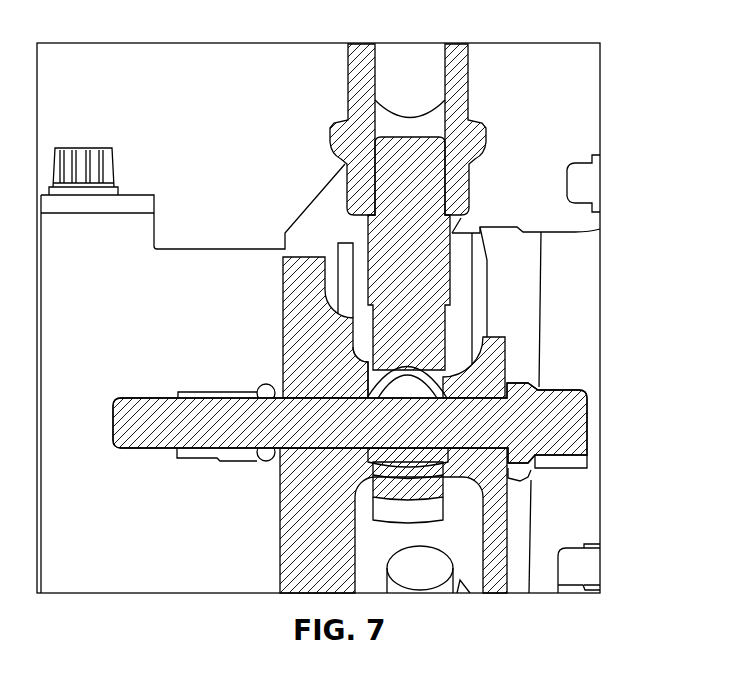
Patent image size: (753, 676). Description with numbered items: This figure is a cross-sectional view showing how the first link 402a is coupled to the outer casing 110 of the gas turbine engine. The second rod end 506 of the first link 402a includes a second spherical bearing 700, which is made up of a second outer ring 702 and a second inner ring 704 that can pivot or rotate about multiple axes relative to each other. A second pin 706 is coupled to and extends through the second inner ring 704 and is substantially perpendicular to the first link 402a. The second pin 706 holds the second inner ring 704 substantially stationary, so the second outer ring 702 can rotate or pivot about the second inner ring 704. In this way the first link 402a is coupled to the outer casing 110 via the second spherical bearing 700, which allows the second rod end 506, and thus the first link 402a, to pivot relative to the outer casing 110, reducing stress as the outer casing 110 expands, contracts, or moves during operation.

The first link 402a is at (273, 89).
The outer casing 110 is at (310, 302).
The second rod end 506 is at (402, 278).
The second spherical bearing 700 is at (349, 369).
The second outer ring 702 is at (413, 372).
The second inner ring 704 is at (415, 388).
The second pin 706 is at (167, 428).